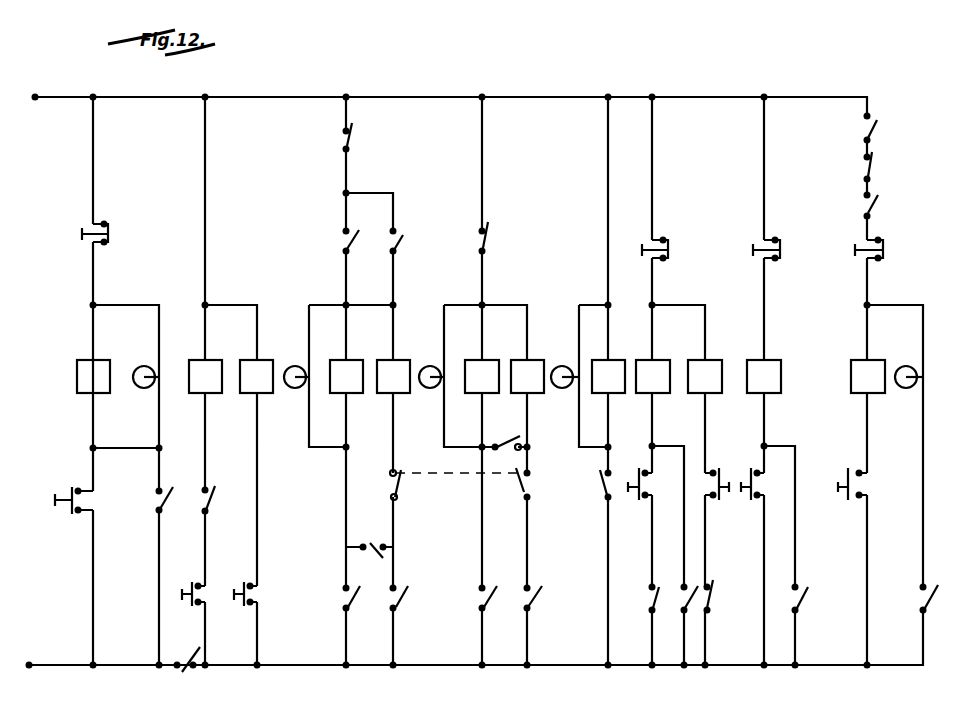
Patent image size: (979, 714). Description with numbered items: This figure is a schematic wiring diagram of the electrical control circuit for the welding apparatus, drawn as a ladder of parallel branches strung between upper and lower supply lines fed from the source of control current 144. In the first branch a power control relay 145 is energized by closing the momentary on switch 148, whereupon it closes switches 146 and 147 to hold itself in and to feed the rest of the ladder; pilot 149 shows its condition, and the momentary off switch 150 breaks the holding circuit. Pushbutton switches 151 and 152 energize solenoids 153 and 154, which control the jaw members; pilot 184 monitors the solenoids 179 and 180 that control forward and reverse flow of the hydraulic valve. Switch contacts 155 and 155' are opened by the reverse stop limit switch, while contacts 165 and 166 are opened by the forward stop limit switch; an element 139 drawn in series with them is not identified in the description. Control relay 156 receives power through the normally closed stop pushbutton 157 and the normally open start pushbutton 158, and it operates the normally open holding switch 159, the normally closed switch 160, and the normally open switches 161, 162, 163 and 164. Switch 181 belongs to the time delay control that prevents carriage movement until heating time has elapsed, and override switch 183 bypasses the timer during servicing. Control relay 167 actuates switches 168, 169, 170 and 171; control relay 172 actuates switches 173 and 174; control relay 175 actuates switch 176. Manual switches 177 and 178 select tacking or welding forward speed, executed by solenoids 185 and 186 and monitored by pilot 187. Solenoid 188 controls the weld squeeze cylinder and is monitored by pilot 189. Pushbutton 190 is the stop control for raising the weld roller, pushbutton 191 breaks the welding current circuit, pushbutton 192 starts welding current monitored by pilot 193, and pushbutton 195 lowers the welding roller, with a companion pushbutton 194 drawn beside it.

The source of control current 144 is at (19, 650).
The power control relay 145 is at (77, 377).
The switch 146 is at (162, 501).
The switch 147 is at (199, 655).
The momentary on switch 148 is at (72, 512).
The pilot 149 is at (136, 369).
The momentary off switch 150 is at (108, 224).
The pushbutton switch 151 is at (192, 586).
The pushbutton switch 152 is at (244, 586).
The solenoid 153 is at (209, 364).
The solenoid 154 is at (264, 364).
The switch contact 155 is at (224, 487).
The switch contact 155' is at (505, 238).
The control relay 156 is at (660, 364).
The normally closed pushbutton switch 157 is at (668, 243).
The normally open pushbutton switch 158 is at (638, 500).
The normally open holding switch 159 is at (685, 610).
The normally closed switch 160 is at (710, 598).
The normally open switch 161 is at (352, 599).
The normally open switch 162 is at (370, 543).
The normally open switch 163 is at (533, 600).
The normally open switch 164 is at (874, 205).
The switch contact 165 is at (870, 162).
The switch contact 166 is at (350, 137).
The control relay 167 is at (710, 364).
The switch 168 is at (400, 598).
The switch 169 is at (488, 596).
The switch 170 is at (510, 434).
The switch 171 is at (652, 598).
The control relay 172 is at (775, 364).
The switch 173 is at (802, 602).
The switch 174 is at (602, 483).
The control relay 175 is at (874, 362).
The switch 176 is at (932, 600).
The manual switch 177 is at (402, 487).
The manual switch 178 is at (525, 483).
The solenoid 179 is at (355, 364).
The solenoid 180 is at (404, 364).
The switch 181 is at (351, 240).
The override switch 183 is at (403, 235).
The pilot 184 is at (297, 388).
The solenoid 185 is at (488, 364).
The solenoid 186 is at (534, 364).
The pilot 187 is at (428, 388).
The solenoid 188 is at (612, 364).
The pilot 189 is at (566, 388).
The pushbutton switch 190 is at (780, 253).
The pushbutton switch 191 is at (883, 250).
The pushbutton switch 192 is at (848, 474).
The pilot 193 is at (910, 388).
The push button 194 is at (742, 500).
The pushbutton switch 195 is at (745, 452).
The contact 139 is at (877, 122).